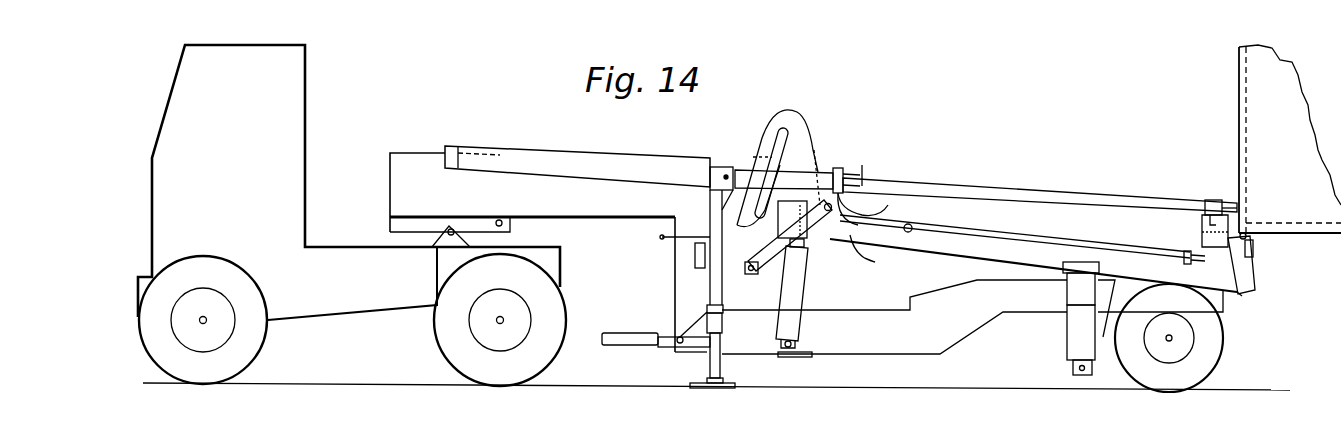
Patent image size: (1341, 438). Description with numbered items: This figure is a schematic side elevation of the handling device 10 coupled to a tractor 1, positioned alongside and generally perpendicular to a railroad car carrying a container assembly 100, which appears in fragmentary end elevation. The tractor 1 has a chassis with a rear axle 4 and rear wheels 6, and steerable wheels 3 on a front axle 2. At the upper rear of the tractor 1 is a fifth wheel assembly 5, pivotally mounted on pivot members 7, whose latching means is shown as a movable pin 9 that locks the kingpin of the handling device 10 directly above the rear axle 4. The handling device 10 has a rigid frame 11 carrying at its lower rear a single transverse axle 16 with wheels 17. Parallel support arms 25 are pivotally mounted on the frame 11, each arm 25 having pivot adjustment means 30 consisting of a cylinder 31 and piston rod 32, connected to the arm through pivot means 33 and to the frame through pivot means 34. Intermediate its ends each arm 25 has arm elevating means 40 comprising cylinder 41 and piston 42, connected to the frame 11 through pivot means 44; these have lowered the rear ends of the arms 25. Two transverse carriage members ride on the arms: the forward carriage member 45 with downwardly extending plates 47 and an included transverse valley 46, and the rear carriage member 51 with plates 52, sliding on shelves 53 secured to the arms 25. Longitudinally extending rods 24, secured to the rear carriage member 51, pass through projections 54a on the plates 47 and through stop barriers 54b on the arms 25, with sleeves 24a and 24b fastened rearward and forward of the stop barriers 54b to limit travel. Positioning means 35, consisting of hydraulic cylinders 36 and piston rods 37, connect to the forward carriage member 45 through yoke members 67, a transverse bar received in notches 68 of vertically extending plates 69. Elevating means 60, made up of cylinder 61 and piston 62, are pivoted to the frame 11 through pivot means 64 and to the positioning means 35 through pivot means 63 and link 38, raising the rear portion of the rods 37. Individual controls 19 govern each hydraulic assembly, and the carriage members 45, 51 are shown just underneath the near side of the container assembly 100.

The tractor 1 is at (297, 80).
The front axle 2 is at (206, 322).
The steerable wheels 3 is at (250, 345).
The rear axle 4 is at (503, 320).
The fifth wheel assembly 5 is at (390, 221).
The rear wheels 6 is at (540, 280).
The pivot members 7 is at (447, 236).
The movable pin 9 is at (503, 223).
The handling device 10 is at (405, 152).
The frame 11 is at (943, 332).
The transverse axle 16 is at (1172, 338).
The wheels 17 is at (1210, 360).
The controls 19 is at (695, 258).
The rods 24 is at (958, 238).
The sleeve 24a is at (908, 224).
The sleeve 24b is at (873, 265).
The support arms 25 is at (965, 245).
The pivot adjustment means 30 is at (812, 300).
The cylinder 31 is at (785, 320).
The piston rod 32 is at (792, 219).
The pivot means 33 is at (800, 140).
The pivot means 34 is at (795, 345).
The positioning means 35 is at (520, 148).
The hydraulic cylinders 36 is at (452, 152).
The piston rods 37 is at (1018, 190).
The link 38 is at (830, 170).
The support arm elevating means 40 is at (1064, 348).
The cylinder 41 is at (1075, 327).
The piston 42 is at (1080, 287).
The pivot means 44 is at (1083, 375).
The forward positioning or carriage member 45 is at (1248, 235).
The transverse valley 46 is at (1240, 290).
The plates 47 is at (1200, 240).
The rear positioning or carriage member 51 is at (1255, 250).
The plates 52 is at (1252, 268).
The shelves 53 is at (1130, 256).
The projections 54a is at (1184, 256).
The stop barriers 54b is at (862, 195).
The elevating means 60 is at (808, 255).
The cylinder 61 is at (770, 252).
The piston 62 is at (830, 214).
The pivot means 63 is at (862, 159).
The pivot means 64 is at (766, 272).
The yoke members 67 is at (1218, 200).
The notches 68 is at (1205, 205).
The plates 69 is at (1200, 220).
The container assembly 100 is at (1238, 72).